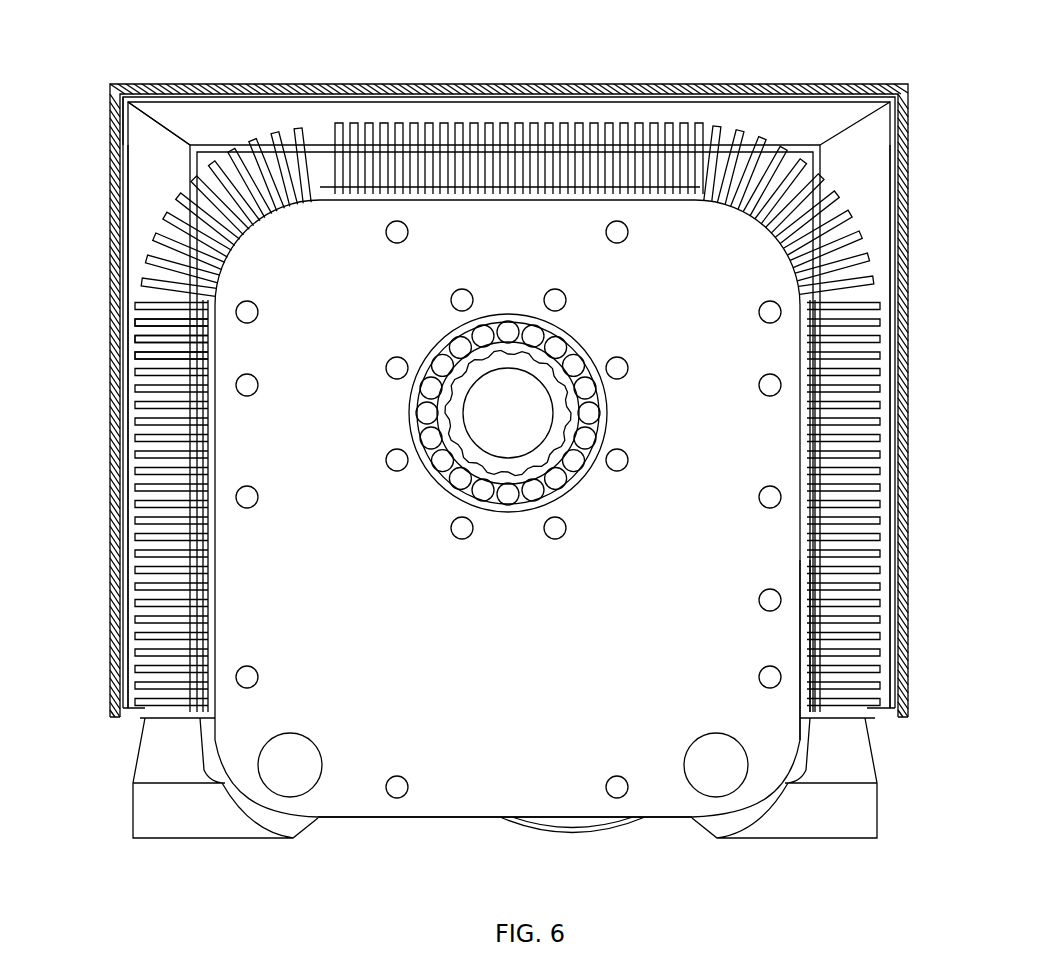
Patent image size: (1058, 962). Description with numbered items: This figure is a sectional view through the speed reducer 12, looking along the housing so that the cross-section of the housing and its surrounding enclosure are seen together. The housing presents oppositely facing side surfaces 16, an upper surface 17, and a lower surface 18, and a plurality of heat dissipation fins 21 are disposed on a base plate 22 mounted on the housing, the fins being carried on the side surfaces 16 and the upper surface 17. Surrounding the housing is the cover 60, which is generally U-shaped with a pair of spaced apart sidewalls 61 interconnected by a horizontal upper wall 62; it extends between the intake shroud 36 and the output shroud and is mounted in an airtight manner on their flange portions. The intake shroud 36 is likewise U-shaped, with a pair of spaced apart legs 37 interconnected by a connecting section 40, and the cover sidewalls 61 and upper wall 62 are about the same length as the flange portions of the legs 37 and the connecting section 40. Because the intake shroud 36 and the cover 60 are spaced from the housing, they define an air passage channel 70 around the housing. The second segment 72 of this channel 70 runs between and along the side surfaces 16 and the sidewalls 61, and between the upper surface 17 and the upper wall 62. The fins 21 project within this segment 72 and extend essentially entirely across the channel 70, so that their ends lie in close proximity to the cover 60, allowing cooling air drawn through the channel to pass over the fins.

The speed reducer 12 is at (192, 826).
The side surfaces 16 is at (806, 513).
The upper surface 17 is at (320, 190).
The lower surface 18 is at (356, 820).
The heat dissipation fins 21 is at (845, 200).
The base plate 22 is at (800, 623).
The intake shroud 36 is at (652, 110).
The legs 37 is at (135, 178).
The connecting section 40 is at (735, 118).
The cover 60 is at (480, 84).
The sidewalls 61 is at (905, 382).
The upper wall 62 is at (549, 92).
The air passage channel 70 is at (195, 118).
The second segment 72 is at (327, 100).